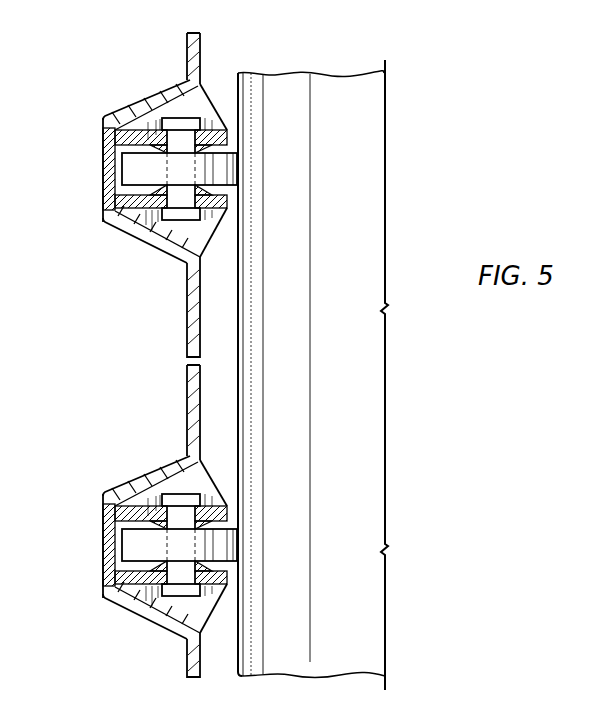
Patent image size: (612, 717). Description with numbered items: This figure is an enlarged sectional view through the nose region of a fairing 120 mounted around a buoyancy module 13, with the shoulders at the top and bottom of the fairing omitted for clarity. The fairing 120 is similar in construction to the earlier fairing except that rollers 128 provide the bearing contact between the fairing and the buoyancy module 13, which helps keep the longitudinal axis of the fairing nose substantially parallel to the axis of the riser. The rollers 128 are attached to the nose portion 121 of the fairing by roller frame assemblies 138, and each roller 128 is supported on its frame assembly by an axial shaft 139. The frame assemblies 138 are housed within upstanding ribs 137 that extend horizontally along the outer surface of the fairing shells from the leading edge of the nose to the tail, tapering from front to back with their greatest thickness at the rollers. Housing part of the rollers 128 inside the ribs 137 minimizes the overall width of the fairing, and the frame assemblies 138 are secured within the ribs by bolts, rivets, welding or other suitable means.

The buoyancy module 13 is at (343, 171).
The fairing 120 is at (172, 408).
The nose portion 121 is at (187, 346).
The rollers 128 is at (132, 167).
The upstanding ribs 137 is at (103, 136).
The roller frame assemblies 138 is at (213, 92).
The axial shafts 139 is at (112, 228).